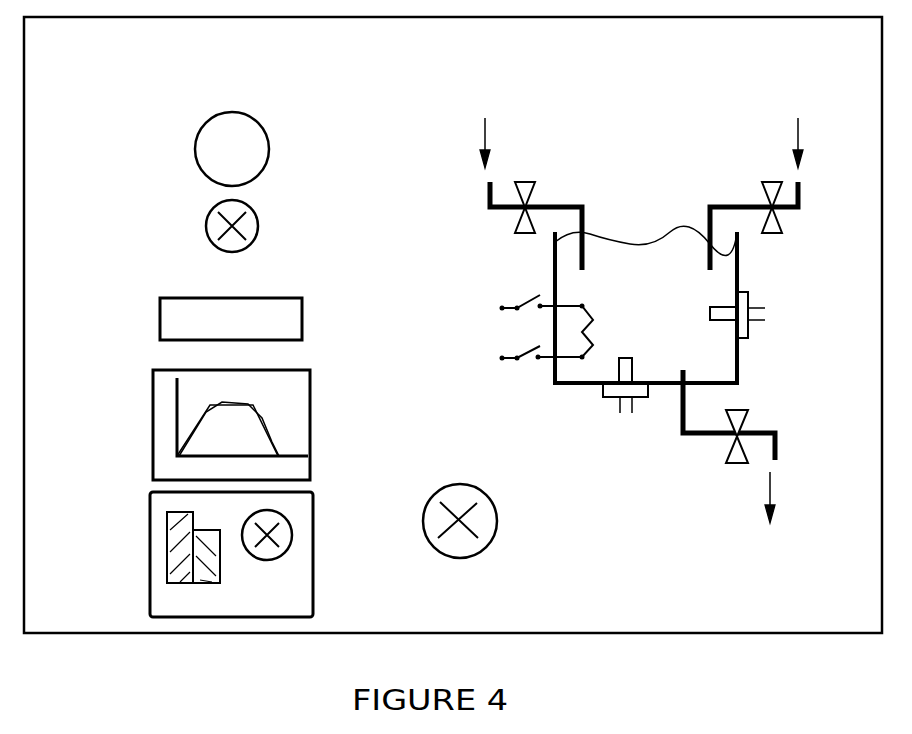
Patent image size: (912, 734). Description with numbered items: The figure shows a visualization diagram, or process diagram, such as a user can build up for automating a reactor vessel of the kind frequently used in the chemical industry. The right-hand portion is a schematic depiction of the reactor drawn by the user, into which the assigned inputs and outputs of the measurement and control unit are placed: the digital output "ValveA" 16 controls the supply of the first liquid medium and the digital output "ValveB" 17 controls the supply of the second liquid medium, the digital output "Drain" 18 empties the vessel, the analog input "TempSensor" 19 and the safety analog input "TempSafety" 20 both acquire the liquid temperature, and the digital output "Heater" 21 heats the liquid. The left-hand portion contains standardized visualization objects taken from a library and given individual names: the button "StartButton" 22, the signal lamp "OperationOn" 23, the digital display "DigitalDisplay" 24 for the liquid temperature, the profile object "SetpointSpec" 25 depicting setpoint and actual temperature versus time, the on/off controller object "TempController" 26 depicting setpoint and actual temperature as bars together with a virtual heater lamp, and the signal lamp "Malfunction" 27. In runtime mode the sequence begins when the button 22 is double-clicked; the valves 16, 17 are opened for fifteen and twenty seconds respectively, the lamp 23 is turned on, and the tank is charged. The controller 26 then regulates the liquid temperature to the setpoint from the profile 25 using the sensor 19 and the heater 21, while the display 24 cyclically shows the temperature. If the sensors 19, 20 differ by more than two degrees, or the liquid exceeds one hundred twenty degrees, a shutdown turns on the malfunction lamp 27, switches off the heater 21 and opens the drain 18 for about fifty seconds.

The digital output "ValveA" 16 is at (530, 173).
The digital output "ValveB" 17 is at (767, 168).
The digital output "Drain" 18 is at (735, 473).
The analog input "TempSensor" 19 is at (773, 308).
The analog input "TempSafety" 20 is at (627, 420).
The digital output "Heater" 21 is at (507, 330).
The Button visualization object "StartButton" 22 is at (202, 143).
The SignalLamp visualization object "OperationOn" 23 is at (213, 223).
The DigitalDisplay visualization object "DigitalDisplay" 24 is at (167, 312).
The Profile visualization object "SetpointSpec" 25 is at (163, 423).
The OnOffController visualization object "TempController" 26 is at (163, 563).
The SignalLamp visualization object "Malfunction" 27 is at (455, 502).